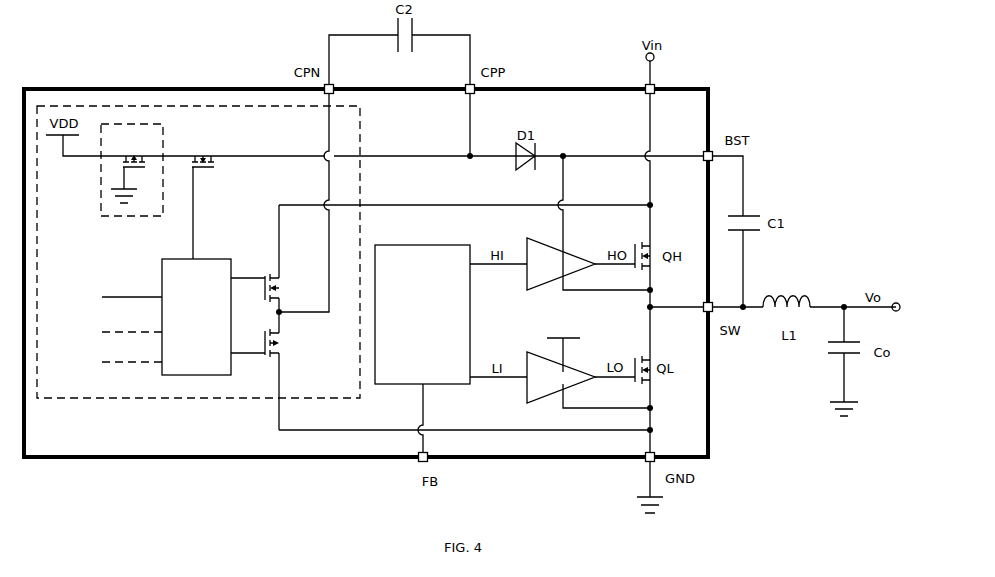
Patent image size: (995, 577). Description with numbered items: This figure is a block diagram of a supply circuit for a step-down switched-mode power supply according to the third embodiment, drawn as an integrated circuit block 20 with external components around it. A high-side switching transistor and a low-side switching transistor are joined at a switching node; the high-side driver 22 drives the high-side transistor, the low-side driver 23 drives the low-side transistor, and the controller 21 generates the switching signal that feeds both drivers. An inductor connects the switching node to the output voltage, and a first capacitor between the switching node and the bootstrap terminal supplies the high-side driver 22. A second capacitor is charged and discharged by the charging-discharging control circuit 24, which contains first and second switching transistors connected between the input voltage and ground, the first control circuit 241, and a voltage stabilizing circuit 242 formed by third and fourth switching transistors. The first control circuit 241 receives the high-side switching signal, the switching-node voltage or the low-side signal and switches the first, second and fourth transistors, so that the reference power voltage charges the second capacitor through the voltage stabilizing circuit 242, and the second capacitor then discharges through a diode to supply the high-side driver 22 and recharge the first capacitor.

The power converter chip 20 is at (220, 87).
The controller 21 is at (422, 314).
The high-side driver 22 is at (568, 259).
The low-side driver 23 is at (568, 372).
The charging-discharging control circuit 24 is at (117, 398).
The first control circuit 241 is at (196, 317).
The transistor Q3 block 242 is at (101, 196).